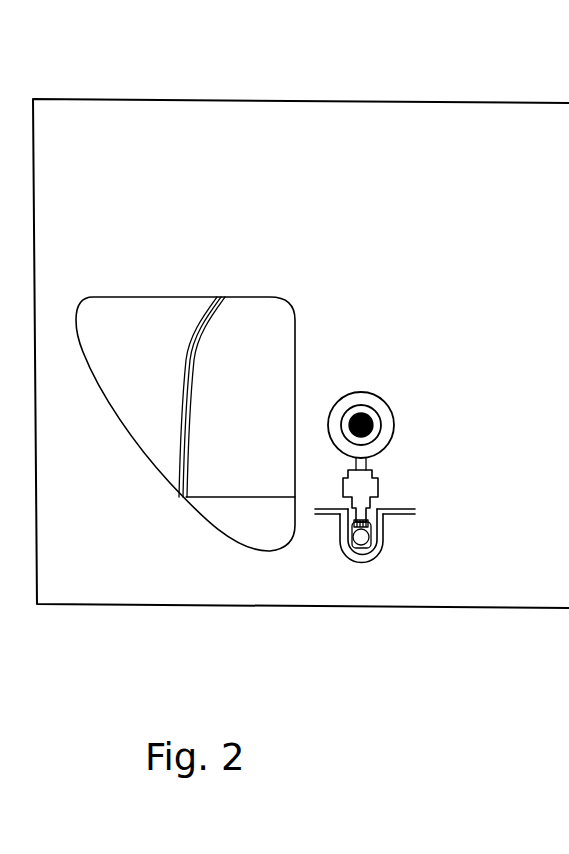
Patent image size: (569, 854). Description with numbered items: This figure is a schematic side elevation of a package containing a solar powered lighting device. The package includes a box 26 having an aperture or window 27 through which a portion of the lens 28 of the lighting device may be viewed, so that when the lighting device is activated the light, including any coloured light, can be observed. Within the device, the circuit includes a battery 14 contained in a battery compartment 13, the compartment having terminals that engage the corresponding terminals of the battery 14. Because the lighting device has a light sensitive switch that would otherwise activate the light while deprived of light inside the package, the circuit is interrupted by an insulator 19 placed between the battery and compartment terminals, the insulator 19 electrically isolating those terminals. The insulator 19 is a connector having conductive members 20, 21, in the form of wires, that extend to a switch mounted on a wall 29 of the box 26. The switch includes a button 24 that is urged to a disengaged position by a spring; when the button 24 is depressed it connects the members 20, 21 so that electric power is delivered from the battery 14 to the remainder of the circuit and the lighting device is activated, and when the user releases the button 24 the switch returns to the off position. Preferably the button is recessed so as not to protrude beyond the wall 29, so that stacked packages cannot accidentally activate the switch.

The box 26 is at (243, 98).
The aperture (window) 27 is at (157, 333).
The lens 28 is at (267, 385).
The button 24 is at (368, 418).
The conductive member (wire) 20 is at (345, 490).
The conductive member (wire) 21 is at (378, 485).
The insulator 19 is at (385, 498).
The battery compartment 13 is at (343, 543).
The battery 14 is at (372, 540).
The wall 29 is at (535, 413).